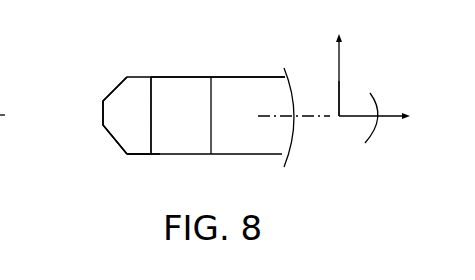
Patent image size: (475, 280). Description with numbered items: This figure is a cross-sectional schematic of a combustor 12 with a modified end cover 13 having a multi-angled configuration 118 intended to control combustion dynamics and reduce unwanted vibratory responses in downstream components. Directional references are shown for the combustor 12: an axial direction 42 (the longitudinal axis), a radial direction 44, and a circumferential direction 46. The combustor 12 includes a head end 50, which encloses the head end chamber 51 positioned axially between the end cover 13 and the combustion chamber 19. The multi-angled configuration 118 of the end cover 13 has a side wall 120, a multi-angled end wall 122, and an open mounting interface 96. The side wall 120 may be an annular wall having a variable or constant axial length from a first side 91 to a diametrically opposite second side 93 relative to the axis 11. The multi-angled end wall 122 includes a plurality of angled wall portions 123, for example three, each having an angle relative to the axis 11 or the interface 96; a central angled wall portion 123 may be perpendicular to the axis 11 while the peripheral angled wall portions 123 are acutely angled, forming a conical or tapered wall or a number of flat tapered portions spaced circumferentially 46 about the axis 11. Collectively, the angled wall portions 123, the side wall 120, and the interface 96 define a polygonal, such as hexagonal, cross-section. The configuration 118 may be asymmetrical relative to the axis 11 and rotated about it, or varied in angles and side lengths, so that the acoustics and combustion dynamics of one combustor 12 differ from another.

The axis 11 is at (293, 122).
The combustor 12 is at (261, 42).
The end cover 13 is at (86, 108).
The combustion chamber 19 is at (250, 124).
The axial direction 42 is at (357, 118).
The radial direction 44 is at (339, 81).
The circumferential direction 46 is at (359, 89).
The head end 50 is at (185, 58).
The head end chamber 51 is at (188, 124).
The first side 91 is at (152, 155).
The second side 93 is at (151, 78).
The open mounting interface 96 is at (152, 116).
The multi-angled configuration 118 is at (64, 119).
The side wall 120 is at (140, 155).
The multi-angled end wall 122 is at (96, 122).
The angled wall portions 123 is at (102, 113).